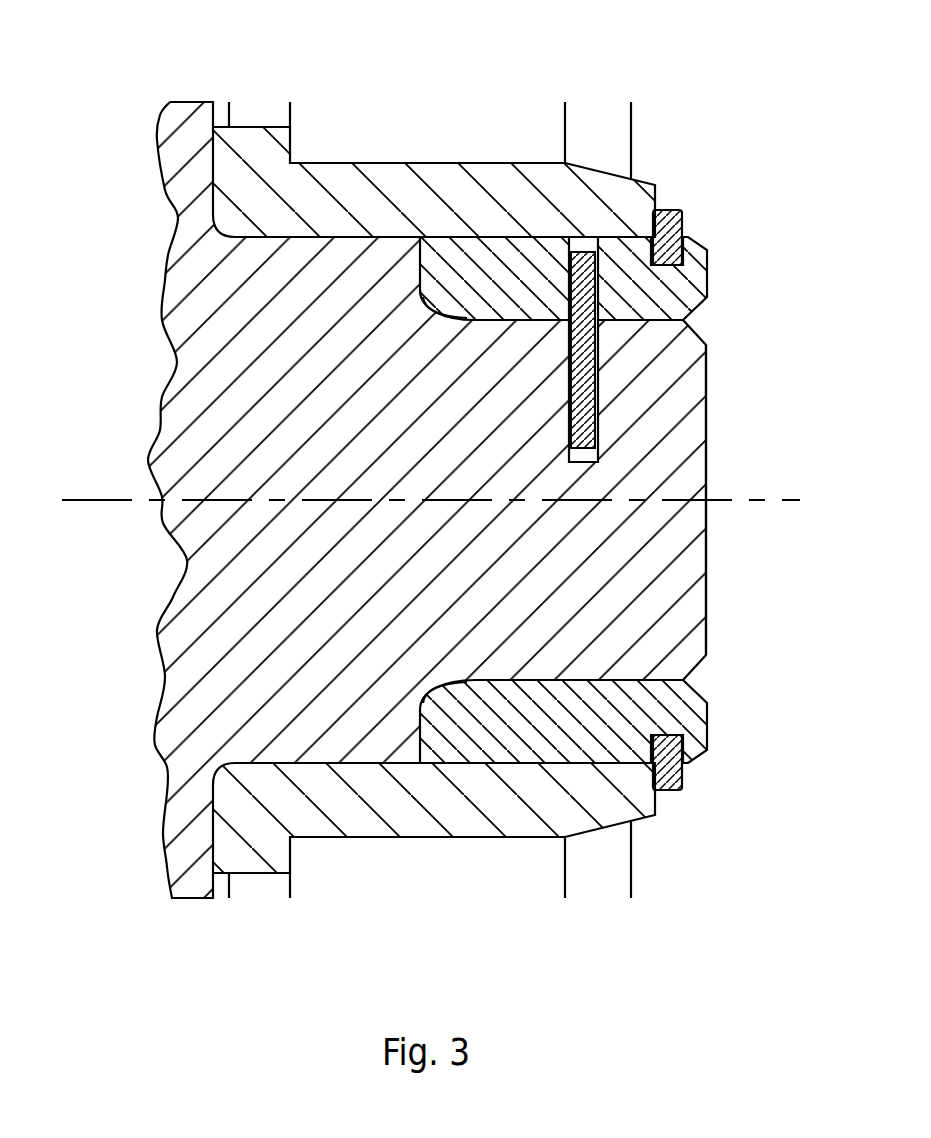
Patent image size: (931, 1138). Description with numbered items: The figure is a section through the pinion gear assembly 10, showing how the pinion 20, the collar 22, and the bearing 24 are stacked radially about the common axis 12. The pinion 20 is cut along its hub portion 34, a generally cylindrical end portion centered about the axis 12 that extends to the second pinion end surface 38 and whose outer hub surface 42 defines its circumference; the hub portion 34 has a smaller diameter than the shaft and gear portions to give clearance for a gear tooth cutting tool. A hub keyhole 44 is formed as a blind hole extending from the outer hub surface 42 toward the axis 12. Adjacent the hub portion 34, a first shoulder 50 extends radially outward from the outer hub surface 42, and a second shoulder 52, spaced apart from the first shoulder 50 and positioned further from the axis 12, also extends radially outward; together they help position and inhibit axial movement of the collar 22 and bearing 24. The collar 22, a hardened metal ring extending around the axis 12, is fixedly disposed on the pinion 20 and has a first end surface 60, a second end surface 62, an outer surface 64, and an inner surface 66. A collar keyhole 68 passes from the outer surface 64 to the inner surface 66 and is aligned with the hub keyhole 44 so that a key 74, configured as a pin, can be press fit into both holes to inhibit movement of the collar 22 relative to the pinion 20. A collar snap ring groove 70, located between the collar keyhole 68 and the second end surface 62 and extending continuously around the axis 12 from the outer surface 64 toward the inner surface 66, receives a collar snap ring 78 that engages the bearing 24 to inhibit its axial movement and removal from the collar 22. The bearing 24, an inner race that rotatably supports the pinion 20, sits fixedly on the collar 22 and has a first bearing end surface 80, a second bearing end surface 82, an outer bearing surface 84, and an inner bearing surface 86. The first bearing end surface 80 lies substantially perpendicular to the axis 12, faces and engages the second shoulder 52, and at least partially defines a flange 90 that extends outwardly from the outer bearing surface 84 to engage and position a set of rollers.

The pinion gear assembly 10 is at (648, 44).
The axis 12 is at (735, 500).
The pinion 20 is at (152, 395).
The collar 22 is at (703, 766).
The bearing 24 is at (597, 156).
The hub portion 34 is at (425, 600).
The second pinion end surface 38 is at (706, 572).
The outer hub surface 42 is at (455, 678).
The hub keyhole 44 is at (598, 454).
The first shoulder 50 is at (364, 828).
The second shoulder 52 is at (213, 833).
The first end surface 60 is at (418, 735).
The second end surface 62 is at (706, 720).
The outer surface 64 is at (478, 763).
The inner surface 66 is at (635, 680).
The collar keyhole 68 is at (598, 350).
The collar snap ring groove 70 is at (707, 297).
The key 74 is at (585, 400).
The collar snap ring 78 is at (681, 209).
The first bearing end surface 80 is at (213, 170).
The second bearing end surface 82 is at (656, 186).
The outer bearing surface 84 is at (432, 163).
The inner bearing surface 86 is at (308, 238).
The flange 90 is at (263, 127).